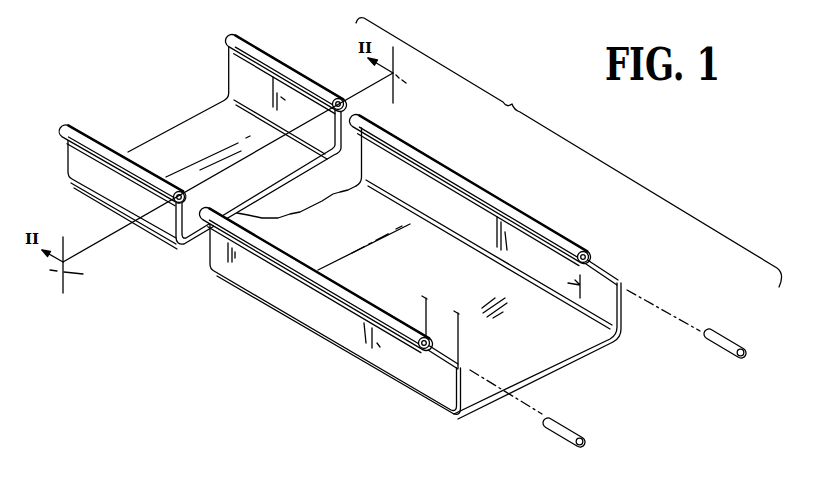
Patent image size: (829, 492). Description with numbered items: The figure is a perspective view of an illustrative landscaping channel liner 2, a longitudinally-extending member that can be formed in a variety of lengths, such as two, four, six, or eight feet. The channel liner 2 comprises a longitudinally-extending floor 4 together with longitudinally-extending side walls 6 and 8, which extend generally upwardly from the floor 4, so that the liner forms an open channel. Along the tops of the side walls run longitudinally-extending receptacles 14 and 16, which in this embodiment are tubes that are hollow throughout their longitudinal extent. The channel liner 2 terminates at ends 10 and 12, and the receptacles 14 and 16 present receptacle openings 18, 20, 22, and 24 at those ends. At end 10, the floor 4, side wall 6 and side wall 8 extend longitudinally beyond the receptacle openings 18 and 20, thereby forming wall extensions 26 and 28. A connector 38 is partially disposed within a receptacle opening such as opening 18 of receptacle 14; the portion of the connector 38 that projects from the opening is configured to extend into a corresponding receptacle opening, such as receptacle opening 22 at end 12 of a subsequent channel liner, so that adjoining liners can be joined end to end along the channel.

The landscaping channel liner 2 is at (410, 133).
The floor 4 is at (428, 257).
The side wall 6 is at (157, 214).
The side wall 8 is at (490, 224).
The end 10 is at (439, 239).
The end 12 is at (193, 139).
The receptacle 14 is at (139, 180).
The receptacle 16 is at (382, 150).
The receptacle opening 18 is at (310, 112).
The receptacle opening 20 is at (594, 256).
The receptacle opening 22 is at (68, 122).
The receptacle opening 24 is at (227, 37).
The wall extension 26 is at (459, 319).
The wall extension 28 is at (619, 311).
The connector 38 is at (568, 430).